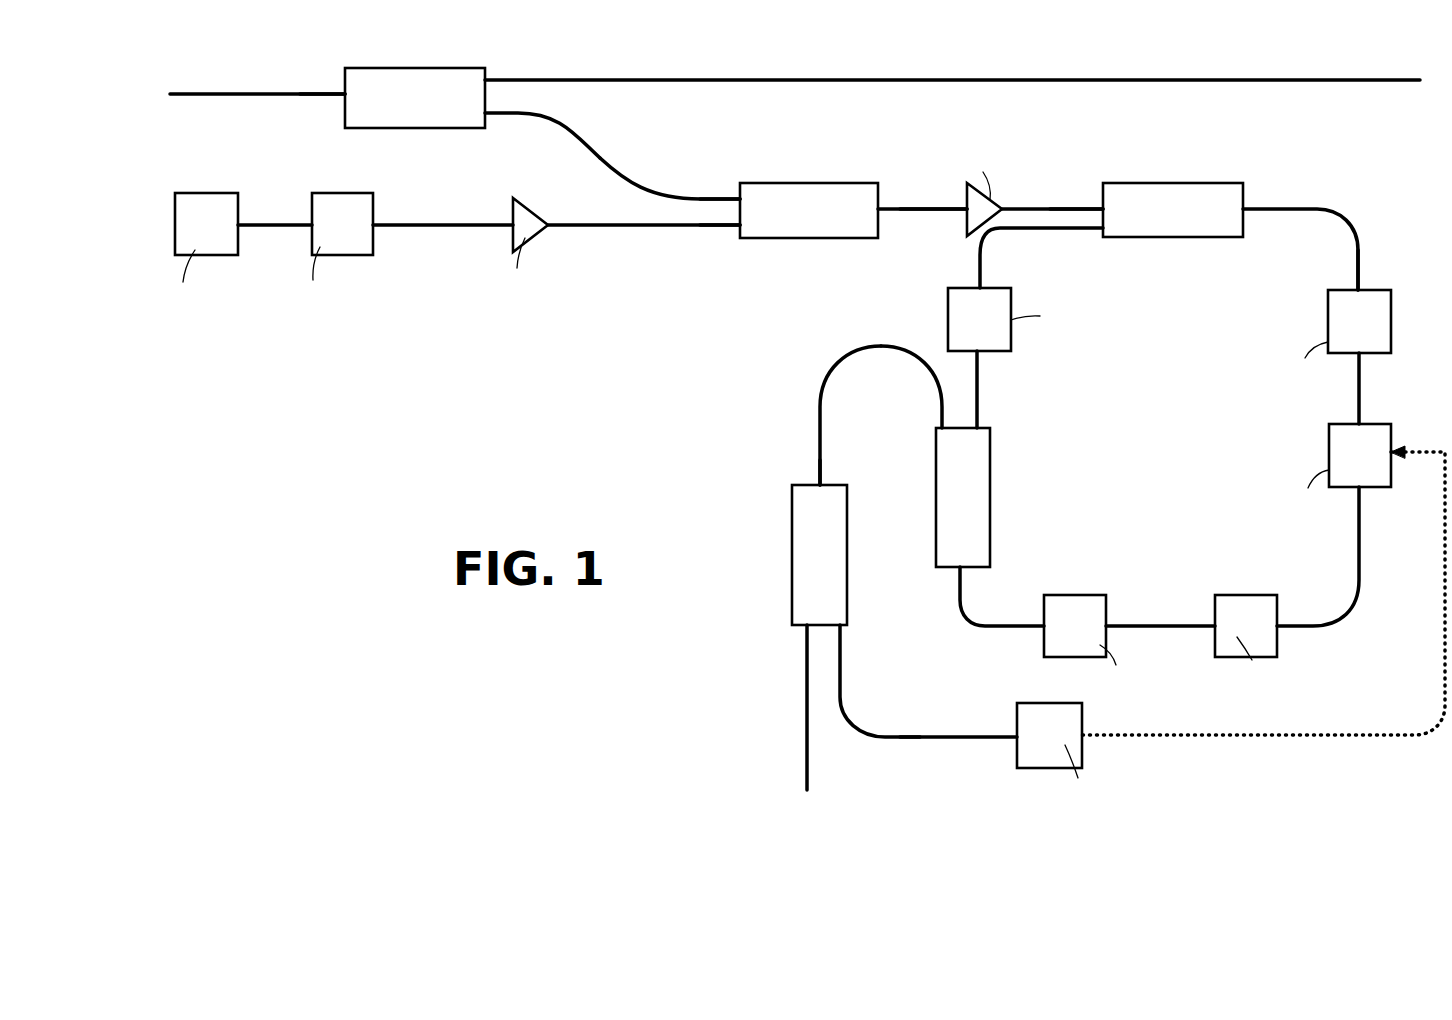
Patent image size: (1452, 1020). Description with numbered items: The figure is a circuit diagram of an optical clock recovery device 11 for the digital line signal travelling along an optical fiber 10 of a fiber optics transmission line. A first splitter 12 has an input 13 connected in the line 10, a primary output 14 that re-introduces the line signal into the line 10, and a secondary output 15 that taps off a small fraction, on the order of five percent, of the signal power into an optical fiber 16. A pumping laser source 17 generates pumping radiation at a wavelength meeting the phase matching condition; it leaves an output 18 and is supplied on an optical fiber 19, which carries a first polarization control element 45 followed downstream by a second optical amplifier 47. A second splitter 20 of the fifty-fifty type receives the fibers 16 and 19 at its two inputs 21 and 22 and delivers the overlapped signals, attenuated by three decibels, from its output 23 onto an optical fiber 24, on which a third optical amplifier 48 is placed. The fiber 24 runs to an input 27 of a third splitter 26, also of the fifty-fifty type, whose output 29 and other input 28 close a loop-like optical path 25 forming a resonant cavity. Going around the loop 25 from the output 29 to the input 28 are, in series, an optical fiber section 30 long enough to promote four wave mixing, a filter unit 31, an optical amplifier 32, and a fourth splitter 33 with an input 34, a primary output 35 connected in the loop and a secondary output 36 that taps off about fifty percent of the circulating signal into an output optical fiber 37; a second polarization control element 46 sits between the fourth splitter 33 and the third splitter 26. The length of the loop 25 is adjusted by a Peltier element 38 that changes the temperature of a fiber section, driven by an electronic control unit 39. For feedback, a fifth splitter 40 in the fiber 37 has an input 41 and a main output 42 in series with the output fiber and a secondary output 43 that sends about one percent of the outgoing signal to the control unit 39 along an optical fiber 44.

The optical fiber 10 is at (237, 92).
The optical clock recovery device 11 is at (1362, 203).
The first splitter 12 is at (397, 70).
The input 13 is at (345, 91).
The primary output 14 is at (488, 80).
The secondary output 15 is at (490, 115).
The optical fiber 16 is at (618, 175).
The pumping laser source 17 is at (188, 200).
The output 18 is at (242, 228).
The optical fiber 19 is at (414, 228).
The second splitter 20 is at (832, 183).
The input 21 is at (738, 197).
The input 22 is at (736, 228).
The output 23 is at (880, 206).
The optical fiber 24 is at (925, 212).
The loop-like optical path 25 is at (1368, 266).
The third splitter 26 is at (1200, 183).
The input 27 is at (1100, 207).
The input 28 is at (1098, 232).
The output 29 is at (1246, 207).
The optical fiber section 30 is at (1385, 316).
The filter unit 31 is at (1222, 612).
The optical amplifier 32 is at (1068, 603).
The fourth splitter 33 is at (990, 505).
The input 34 is at (960, 573).
The primary output 35 is at (980, 426).
The secondary output 36 is at (940, 425).
The output optical fiber 37 is at (818, 418).
The Peltier element 38 is at (1385, 441).
The electronic control unit 39 is at (1022, 747).
The fifth splitter 40 is at (840, 548).
The input 41 is at (818, 481).
The main output 42 is at (802, 628).
The secondary output 43 is at (843, 631).
The optical fiber 44 is at (937, 736).
The first polarization control element 45 is at (328, 196).
The second polarization control element 46 is at (1037, 333).
The second optical amplifier 47 is at (520, 212).
The third optical amplifier 48 is at (1002, 208).